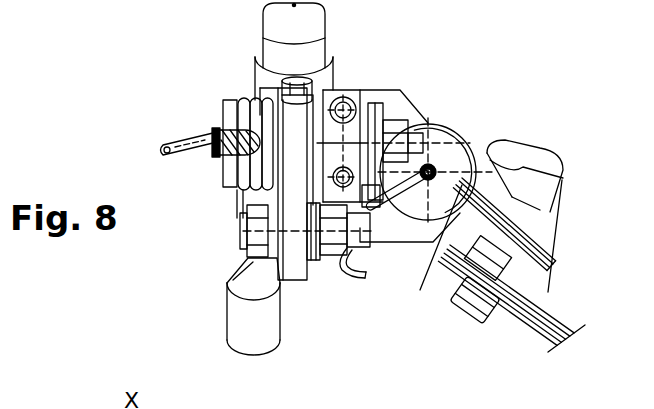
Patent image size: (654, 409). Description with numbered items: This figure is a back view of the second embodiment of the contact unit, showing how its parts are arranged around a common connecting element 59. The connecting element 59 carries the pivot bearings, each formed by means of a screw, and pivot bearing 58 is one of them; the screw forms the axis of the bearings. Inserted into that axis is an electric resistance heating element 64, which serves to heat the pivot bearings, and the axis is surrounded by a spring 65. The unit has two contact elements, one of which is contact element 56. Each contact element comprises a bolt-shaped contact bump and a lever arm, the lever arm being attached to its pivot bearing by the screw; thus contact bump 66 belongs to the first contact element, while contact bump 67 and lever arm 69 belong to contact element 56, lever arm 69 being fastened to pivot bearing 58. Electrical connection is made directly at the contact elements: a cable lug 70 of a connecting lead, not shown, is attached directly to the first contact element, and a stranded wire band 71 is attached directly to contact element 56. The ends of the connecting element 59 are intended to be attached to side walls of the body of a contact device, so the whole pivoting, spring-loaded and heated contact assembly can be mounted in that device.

The contact element 56 is at (502, 136).
The pivot bearing 58 is at (43, 5).
The connecting element 59 is at (397, 105).
The electric resistance heating element 64 is at (217, 132).
The spring 65 is at (240, 197).
The bolt-shaped contact bump 66 is at (310, 27).
The bolt-shaped contact bump 67 is at (537, 160).
The lever arm 69 is at (458, 218).
The cable lug 70 is at (252, 332).
The stranded wire band 71 is at (547, 332).